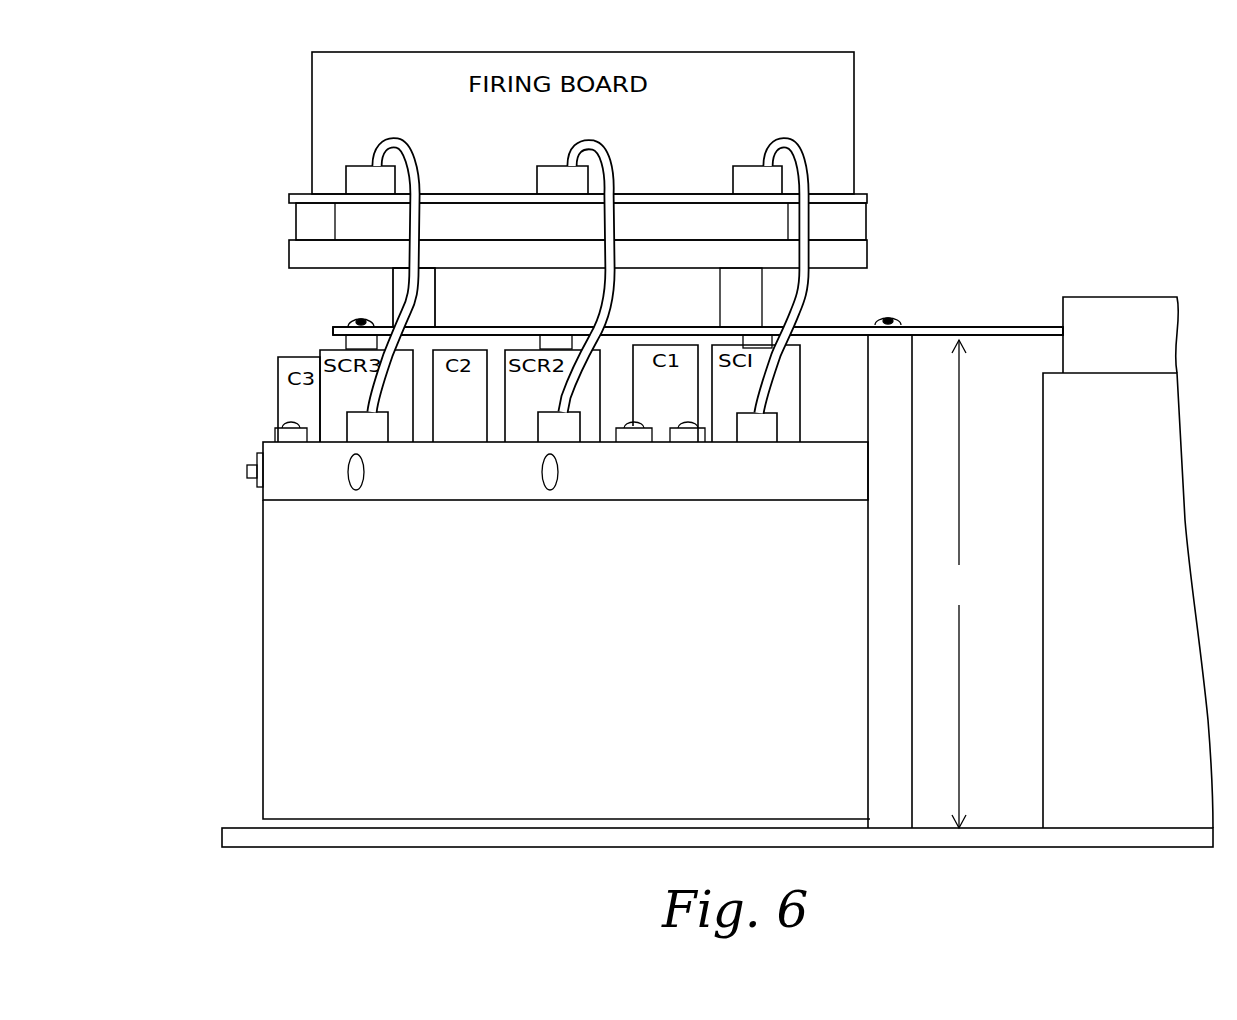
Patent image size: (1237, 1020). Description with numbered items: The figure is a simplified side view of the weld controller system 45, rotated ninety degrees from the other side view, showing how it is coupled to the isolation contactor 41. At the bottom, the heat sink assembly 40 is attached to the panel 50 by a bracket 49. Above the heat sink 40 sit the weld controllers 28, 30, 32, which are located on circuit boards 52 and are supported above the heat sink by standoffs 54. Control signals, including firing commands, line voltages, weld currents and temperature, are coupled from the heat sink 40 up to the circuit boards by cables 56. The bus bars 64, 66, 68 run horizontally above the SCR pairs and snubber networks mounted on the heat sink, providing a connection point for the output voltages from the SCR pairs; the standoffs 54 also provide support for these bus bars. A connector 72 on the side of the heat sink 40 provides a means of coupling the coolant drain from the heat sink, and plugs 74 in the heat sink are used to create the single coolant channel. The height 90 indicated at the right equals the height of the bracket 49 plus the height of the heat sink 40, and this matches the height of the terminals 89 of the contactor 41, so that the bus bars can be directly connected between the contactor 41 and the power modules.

The weld controller 28 is at (873, 190).
The weld controller 30 is at (581, 221).
The weld controller 32 is at (578, 254).
The heat sink assembly 40 is at (288, 478).
The isolation contactor 41 is at (1060, 463).
The weld controller system 45 is at (248, 289).
The bracket 49 is at (295, 702).
The panel 50 is at (241, 836).
The circuit board 52 is at (308, 228).
The standoff 54 is at (393, 283).
The cable 56 is at (357, 172).
The bus bar 64 is at (980, 285).
The bus bar 66 is at (698, 331).
The bus bar 68 is at (698, 331).
The connector 72 is at (247, 468).
The plug 74 is at (361, 482).
The terminal 89 is at (1128, 297).
The height 90 is at (960, 584).